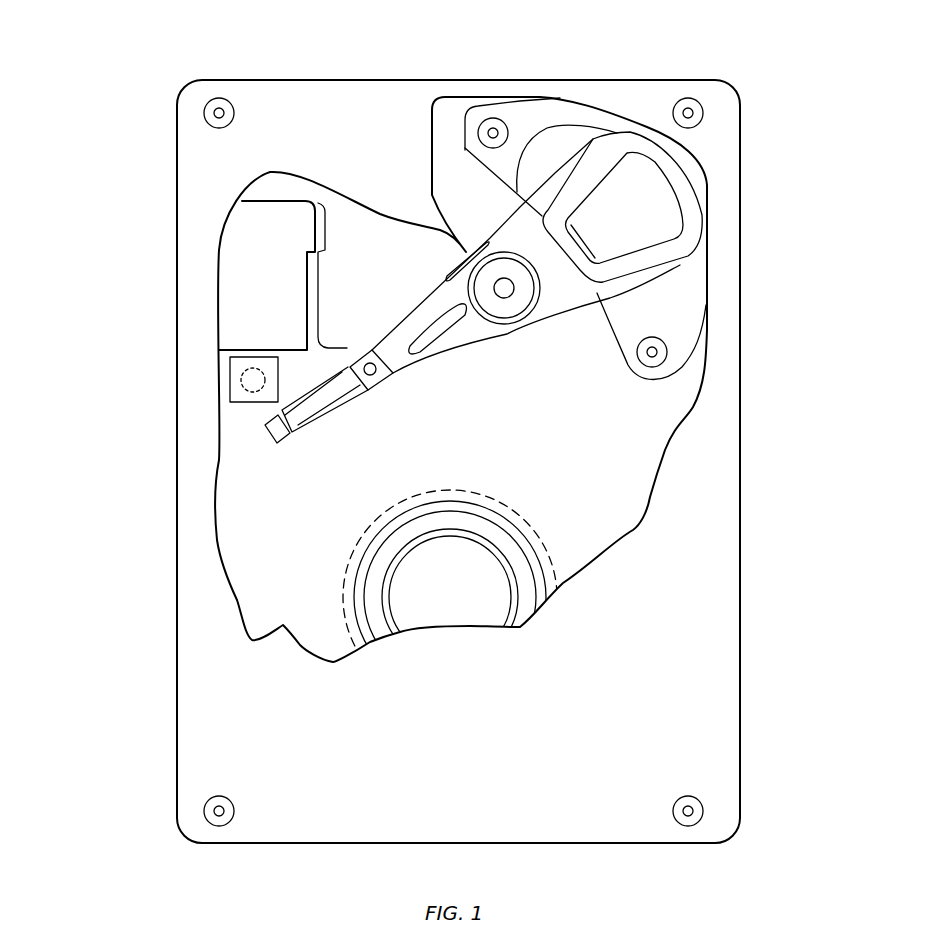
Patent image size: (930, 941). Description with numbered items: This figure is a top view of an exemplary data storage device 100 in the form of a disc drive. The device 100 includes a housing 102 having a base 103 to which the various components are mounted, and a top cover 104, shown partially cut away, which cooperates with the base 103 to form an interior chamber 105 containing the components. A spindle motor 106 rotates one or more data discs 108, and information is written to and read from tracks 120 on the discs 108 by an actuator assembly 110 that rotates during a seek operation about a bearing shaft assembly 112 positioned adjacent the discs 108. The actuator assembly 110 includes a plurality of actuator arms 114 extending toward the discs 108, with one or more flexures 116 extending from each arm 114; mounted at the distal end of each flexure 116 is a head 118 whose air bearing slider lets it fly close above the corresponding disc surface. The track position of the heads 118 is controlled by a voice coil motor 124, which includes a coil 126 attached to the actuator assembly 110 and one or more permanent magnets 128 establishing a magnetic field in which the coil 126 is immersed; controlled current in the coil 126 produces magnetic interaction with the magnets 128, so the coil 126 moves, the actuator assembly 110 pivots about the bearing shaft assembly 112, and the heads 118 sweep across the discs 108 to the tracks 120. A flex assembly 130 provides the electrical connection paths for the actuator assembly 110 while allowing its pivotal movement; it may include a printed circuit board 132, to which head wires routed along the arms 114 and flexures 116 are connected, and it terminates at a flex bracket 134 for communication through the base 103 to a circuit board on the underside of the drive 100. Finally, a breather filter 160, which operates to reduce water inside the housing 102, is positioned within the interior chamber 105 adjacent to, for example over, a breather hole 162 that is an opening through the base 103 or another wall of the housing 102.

The data storage device 100 is at (148, 71).
The housing 102 is at (193, 278).
The base 103 is at (677, 392).
The top cover 104 is at (233, 712).
The interior chamber 105 is at (663, 413).
The spindle motor 106 is at (448, 597).
The data disc 108 is at (600, 523).
The actuator assembly 110 is at (468, 336).
The bearing shaft assembly 112 is at (507, 290).
The actuator arm 114 is at (440, 357).
The flexure 116 is at (302, 413).
The head 118 is at (277, 433).
The track 120 is at (343, 597).
The voice coil motor 124 is at (562, 98).
The coil 126 is at (693, 213).
The permanent magnet 128 is at (530, 160).
The flex assembly 130 is at (415, 292).
The printed circuit board 132 is at (472, 252).
The flex bracket 134 is at (258, 265).
The breather filter 160 is at (234, 397).
The breather hole 162 is at (228, 362).